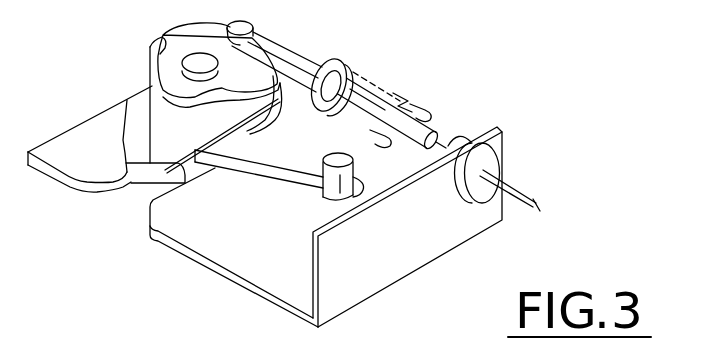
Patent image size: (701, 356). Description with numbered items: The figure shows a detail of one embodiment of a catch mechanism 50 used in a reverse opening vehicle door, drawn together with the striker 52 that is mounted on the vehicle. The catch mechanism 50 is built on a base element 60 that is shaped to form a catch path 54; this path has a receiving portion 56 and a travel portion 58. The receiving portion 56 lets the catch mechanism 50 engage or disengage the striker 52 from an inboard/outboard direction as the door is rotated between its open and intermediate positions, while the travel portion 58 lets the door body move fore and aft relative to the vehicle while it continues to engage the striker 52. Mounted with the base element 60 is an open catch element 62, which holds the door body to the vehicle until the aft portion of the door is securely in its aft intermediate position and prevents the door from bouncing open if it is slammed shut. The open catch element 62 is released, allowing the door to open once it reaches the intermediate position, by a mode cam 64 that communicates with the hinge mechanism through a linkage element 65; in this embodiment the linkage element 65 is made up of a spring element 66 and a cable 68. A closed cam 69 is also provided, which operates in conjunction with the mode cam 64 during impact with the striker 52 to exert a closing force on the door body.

The catch mechanism 50 is at (528, 79).
The striker 52 is at (353, 177).
The catch path 54 is at (210, 172).
The receiving portion 56 is at (130, 202).
The travel portion 58 is at (300, 186).
The base element 60 is at (452, 236).
The open catch element 62 is at (130, 124).
The mode cam 64 is at (167, 38).
The linkage element 65 is at (447, 119).
The spring element 66 is at (377, 97).
The cable 68 is at (516, 187).
The closed cam 69 is at (197, 133).